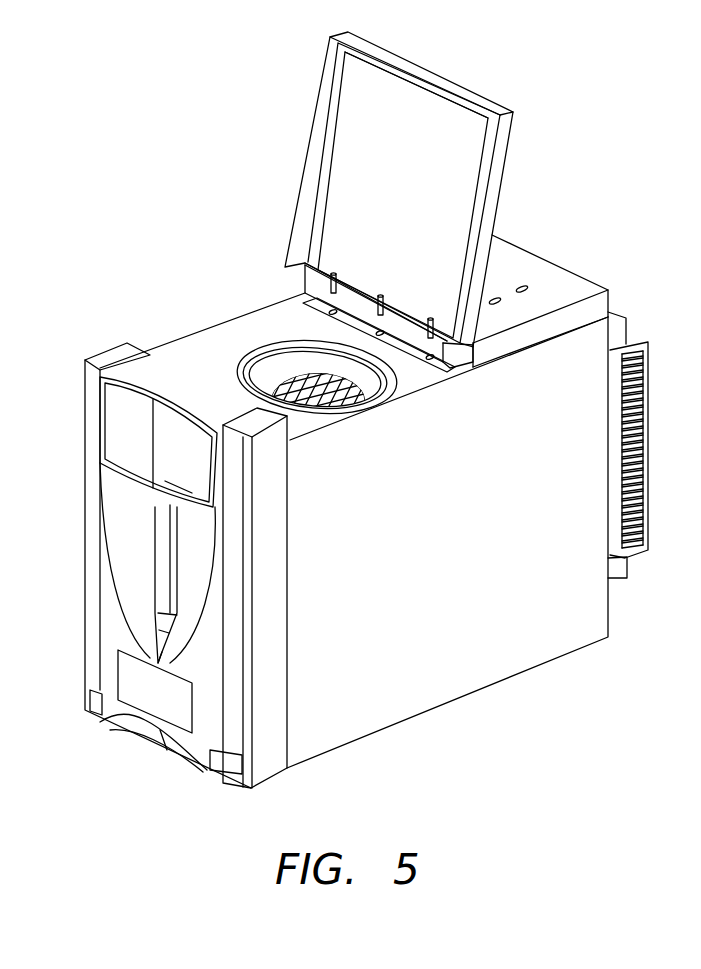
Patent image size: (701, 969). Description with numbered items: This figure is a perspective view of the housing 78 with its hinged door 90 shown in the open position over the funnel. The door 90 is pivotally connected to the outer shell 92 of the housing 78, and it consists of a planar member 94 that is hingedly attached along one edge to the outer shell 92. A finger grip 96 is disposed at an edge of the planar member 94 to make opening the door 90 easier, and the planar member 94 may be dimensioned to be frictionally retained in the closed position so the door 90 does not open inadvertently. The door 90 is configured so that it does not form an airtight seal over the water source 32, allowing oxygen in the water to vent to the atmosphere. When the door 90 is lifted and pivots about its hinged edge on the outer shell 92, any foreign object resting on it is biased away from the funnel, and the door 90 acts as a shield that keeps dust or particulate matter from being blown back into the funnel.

The housing 78 is at (123, 209).
The water source 32 is at (287, 363).
The door 90 is at (358, 157).
The outer shell 92 is at (567, 295).
The planar member 94 is at (465, 178).
The finger grip 96 is at (441, 64).